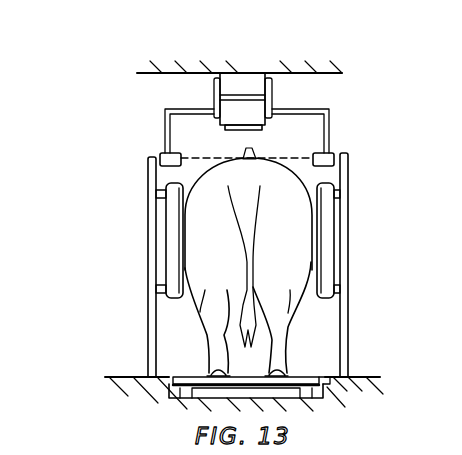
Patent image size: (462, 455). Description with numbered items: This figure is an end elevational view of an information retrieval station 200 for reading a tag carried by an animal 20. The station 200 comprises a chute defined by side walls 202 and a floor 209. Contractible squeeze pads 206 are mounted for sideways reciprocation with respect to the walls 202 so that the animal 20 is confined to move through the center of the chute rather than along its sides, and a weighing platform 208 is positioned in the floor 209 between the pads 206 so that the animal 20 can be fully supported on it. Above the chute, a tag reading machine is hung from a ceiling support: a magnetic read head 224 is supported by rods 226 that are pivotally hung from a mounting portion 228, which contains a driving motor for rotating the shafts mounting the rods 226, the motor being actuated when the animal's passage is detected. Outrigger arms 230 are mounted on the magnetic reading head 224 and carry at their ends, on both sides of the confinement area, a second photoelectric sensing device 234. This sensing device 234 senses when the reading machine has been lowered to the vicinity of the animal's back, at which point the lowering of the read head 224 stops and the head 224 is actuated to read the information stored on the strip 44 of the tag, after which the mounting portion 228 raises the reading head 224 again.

The animal 20 is at (255, 184).
The strip 44 is at (262, 143).
The information retrieval station 200 is at (122, 274).
The side walls 202 is at (147, 332).
The contractible squeeze pads 206 is at (175, 208).
The weighing platform 208 is at (328, 386).
The floor 209 is at (328, 370).
The magnetic read head 224 is at (253, 118).
The rods 226 is at (213, 93).
The mounting portion 228 is at (237, 82).
The outrigger arms 230 is at (166, 132).
The second photoelectric sensing device 234 is at (335, 164).